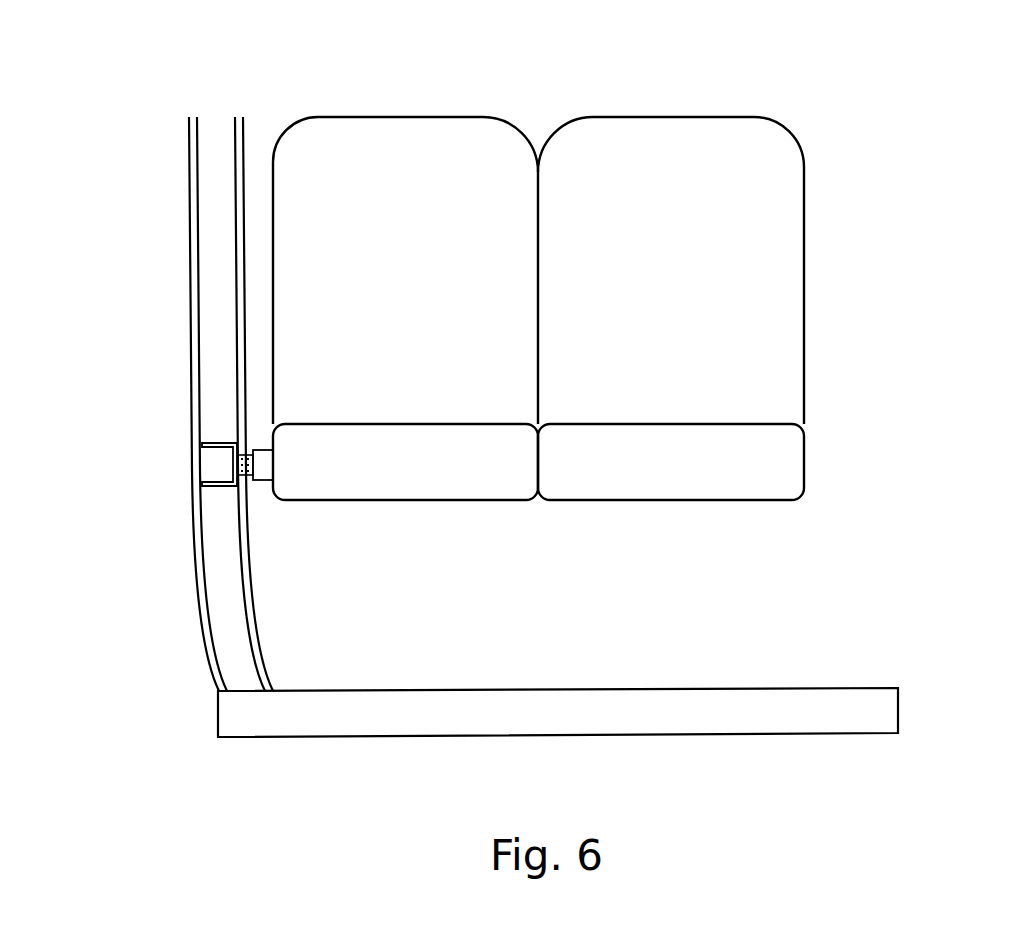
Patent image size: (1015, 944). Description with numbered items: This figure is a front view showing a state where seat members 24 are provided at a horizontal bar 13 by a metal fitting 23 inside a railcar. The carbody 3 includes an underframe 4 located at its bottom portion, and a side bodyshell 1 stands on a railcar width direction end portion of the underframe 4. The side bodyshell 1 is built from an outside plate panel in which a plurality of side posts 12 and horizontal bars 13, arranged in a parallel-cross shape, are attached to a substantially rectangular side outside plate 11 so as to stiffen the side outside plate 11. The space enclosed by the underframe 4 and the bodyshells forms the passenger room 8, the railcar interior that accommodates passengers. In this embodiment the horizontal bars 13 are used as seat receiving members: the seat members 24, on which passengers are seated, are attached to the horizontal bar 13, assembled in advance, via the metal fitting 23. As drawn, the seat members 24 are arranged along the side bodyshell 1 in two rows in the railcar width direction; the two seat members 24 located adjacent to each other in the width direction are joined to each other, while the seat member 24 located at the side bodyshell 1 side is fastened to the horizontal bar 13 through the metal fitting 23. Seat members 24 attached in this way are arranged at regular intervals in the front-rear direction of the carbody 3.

The side bodyshell 1 is at (174, 391).
The carbody 3 is at (630, 322).
The underframe 4 is at (562, 735).
The passenger room 8 is at (518, 609).
The side outside plate 11 is at (197, 316).
The side post 12 is at (215, 268).
The horizontal bar 13 is at (220, 443).
The metal fitting 23 is at (240, 462).
The seat member 24 is at (418, 488).